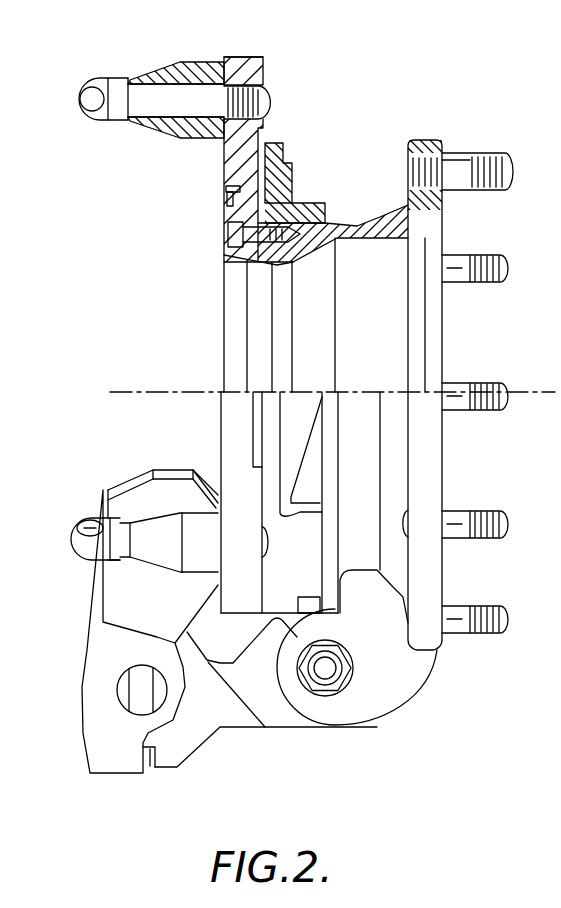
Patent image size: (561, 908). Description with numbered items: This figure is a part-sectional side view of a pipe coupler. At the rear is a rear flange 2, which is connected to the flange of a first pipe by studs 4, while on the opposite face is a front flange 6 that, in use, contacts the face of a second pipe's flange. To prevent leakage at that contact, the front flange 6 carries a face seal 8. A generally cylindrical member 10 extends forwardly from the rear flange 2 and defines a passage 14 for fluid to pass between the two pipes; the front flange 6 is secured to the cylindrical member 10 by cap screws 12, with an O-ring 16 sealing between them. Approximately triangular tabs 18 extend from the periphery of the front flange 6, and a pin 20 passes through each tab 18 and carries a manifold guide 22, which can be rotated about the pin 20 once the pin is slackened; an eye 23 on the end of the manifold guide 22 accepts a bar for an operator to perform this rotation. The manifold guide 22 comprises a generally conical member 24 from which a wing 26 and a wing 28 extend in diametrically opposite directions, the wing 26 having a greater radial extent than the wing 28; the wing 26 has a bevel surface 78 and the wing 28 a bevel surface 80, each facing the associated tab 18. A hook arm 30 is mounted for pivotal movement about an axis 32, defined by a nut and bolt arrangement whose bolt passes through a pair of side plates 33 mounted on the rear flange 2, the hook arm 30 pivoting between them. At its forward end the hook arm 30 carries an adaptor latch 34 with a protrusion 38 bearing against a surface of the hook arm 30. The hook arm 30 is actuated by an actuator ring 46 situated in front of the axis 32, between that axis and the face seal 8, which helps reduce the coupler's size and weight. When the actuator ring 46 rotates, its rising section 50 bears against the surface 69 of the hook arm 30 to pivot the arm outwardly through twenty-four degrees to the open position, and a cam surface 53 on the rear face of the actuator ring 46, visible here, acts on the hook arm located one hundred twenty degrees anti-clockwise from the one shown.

The rear flange 2 is at (444, 218).
The studs 4 is at (486, 152).
The front flange 6 is at (236, 162).
The face seal 8 is at (228, 190).
The cylindrical member 10 is at (354, 225).
The cap screws 12 is at (228, 240).
The passage 14 is at (385, 336).
The O-ring 16 is at (250, 265).
The tabs 18 is at (256, 58).
The pin 20 is at (266, 80).
The manifold guide 22 is at (152, 72).
The eye 23 is at (88, 94).
The conical member 24 is at (244, 65).
The wing 26 is at (124, 592).
The wing 28 is at (150, 492).
The hook arm 30 is at (222, 712).
The axis 32 is at (330, 670).
The side plates 33 is at (388, 672).
The adaptor latch 34 is at (92, 690).
The protrusion 38 is at (150, 770).
The actuator ring 46 is at (310, 212).
The rising section 50 is at (278, 145).
The cam surface 53 is at (312, 452).
The surface 69 is at (300, 725).
The bevel surface 78 is at (262, 722).
The bevel surface 80 is at (210, 476).